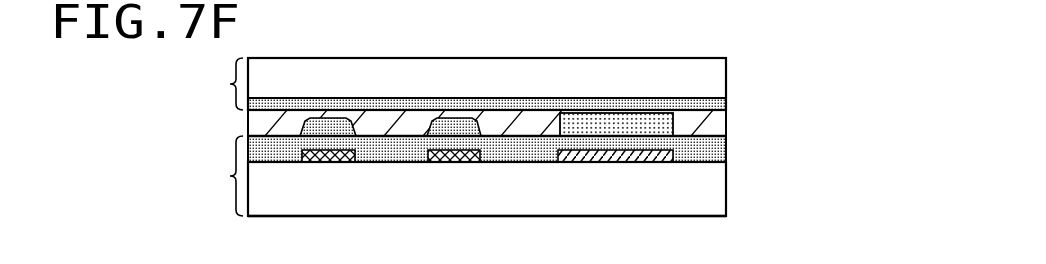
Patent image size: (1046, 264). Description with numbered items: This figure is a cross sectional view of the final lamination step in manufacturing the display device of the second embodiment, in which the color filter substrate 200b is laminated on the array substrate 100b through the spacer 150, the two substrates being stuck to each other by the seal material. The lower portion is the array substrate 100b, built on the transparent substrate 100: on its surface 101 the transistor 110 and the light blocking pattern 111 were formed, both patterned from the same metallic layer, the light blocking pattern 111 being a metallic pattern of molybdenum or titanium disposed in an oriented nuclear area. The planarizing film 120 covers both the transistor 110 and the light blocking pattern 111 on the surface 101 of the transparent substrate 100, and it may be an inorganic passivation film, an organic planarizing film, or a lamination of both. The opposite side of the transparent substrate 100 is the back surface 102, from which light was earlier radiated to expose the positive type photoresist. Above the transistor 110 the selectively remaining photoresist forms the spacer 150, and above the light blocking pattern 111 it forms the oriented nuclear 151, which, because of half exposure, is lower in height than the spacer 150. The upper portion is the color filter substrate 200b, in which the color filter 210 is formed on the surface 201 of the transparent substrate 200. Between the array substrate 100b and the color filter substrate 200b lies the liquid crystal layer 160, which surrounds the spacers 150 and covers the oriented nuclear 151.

The transparent substrate 100 is at (708, 194).
The array substrate 100b is at (205, 176).
The surface of transparent substrate 101 is at (716, 153).
The back surface of transparent substrate 102 is at (709, 218).
The transistor 110 is at (616, 163).
The light blocking pattern 111 is at (331, 163).
The planarizing film 120 is at (727, 144).
The spacer 150 is at (613, 123).
The oriented nuclear 151 is at (325, 118).
The liquid crystal layer 160 is at (722, 122).
The transparent substrate 200 is at (713, 78).
The color filter substrate 200b is at (231, 84).
The surface of transparent substrate 201 is at (663, 98).
The color filter 210 is at (727, 101).